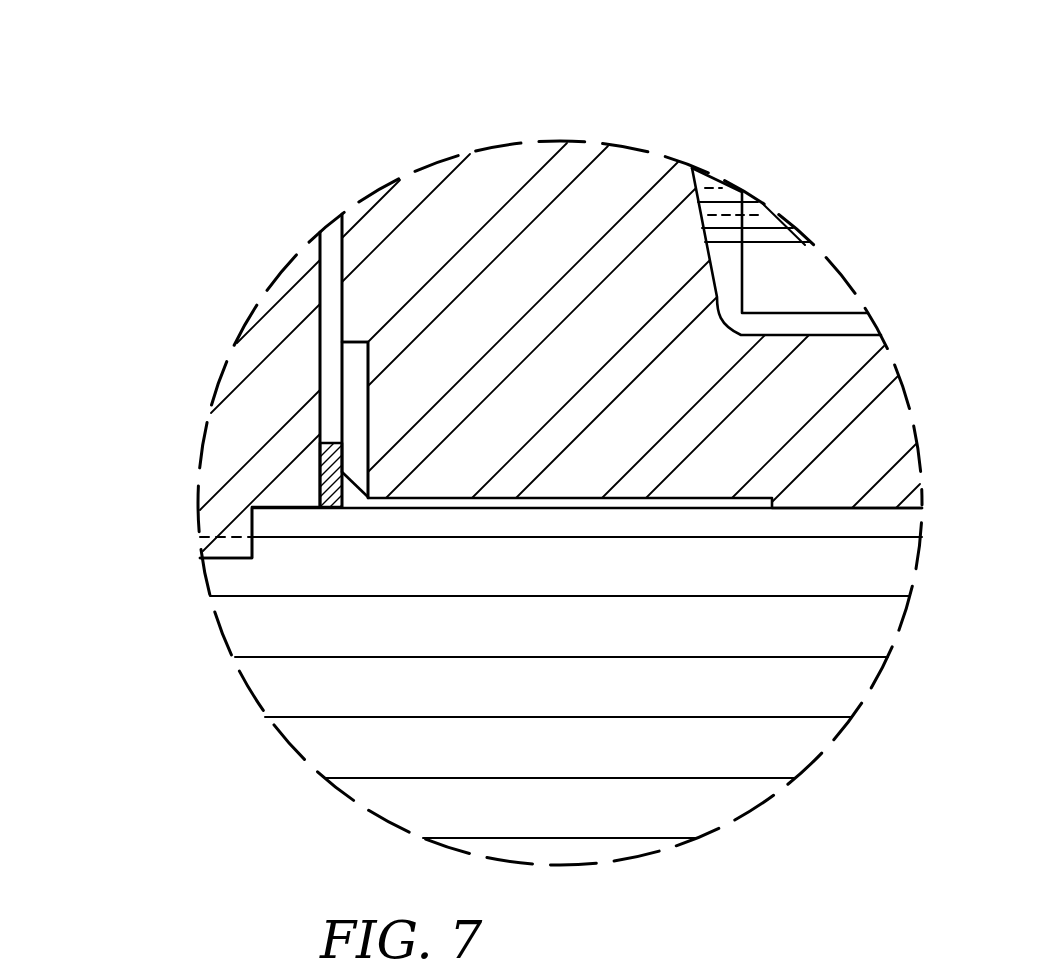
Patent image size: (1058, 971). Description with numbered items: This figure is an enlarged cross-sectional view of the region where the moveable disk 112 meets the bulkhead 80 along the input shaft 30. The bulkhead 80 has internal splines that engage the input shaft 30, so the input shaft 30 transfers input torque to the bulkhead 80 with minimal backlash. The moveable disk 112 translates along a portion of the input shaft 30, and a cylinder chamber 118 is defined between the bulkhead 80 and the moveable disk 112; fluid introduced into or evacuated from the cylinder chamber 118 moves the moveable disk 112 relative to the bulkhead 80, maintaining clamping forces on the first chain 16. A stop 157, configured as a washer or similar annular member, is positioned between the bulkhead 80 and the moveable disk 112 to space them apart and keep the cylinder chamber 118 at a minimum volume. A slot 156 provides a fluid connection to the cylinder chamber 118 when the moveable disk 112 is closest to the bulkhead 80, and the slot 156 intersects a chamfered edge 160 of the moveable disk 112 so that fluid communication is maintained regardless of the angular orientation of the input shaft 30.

The first chain 16 is at (768, 212).
The input shaft 30 is at (257, 617).
The bulkhead 80 is at (255, 377).
The moveable disk 112 is at (583, 218).
The cylinder chamber 118 is at (328, 252).
The slot 156 is at (357, 373).
The stop 157 is at (332, 481).
The chamfered edge 160 is at (351, 478).